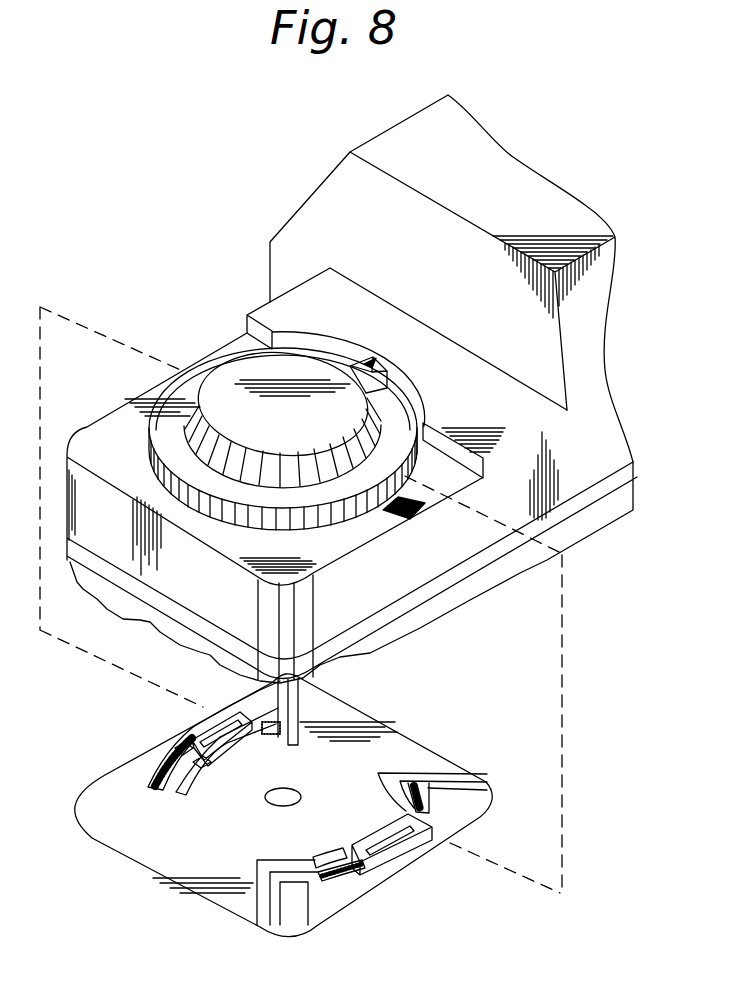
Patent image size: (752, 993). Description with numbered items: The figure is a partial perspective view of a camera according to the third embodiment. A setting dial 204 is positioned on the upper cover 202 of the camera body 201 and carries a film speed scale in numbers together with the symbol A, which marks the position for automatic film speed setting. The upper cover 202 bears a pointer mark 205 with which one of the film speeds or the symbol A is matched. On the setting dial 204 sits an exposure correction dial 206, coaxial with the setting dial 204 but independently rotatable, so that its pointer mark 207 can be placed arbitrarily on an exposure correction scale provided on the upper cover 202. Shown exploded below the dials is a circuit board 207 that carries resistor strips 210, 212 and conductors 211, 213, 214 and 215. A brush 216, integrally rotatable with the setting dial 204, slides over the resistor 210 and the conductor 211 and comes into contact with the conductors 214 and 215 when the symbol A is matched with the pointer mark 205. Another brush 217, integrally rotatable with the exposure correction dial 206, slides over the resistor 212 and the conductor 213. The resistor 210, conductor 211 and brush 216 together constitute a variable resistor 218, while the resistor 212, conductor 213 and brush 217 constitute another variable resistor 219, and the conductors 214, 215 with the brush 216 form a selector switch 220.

The camera body 201 is at (615, 512).
The upper cover 202 is at (598, 362).
The setting dial 204 is at (160, 403).
The pointer mark 205 is at (385, 513).
The exposure correction dial 206 is at (240, 372).
The pointer mark / circuit board 207 is at (347, 372).
The resistor strip 210 is at (352, 878).
The conductor 211 is at (328, 855).
The resistor strip 212 is at (152, 767).
The conductor 213 is at (188, 773).
The conductor 214 is at (303, 887).
The conductor 215 is at (277, 863).
The brush 216 is at (467, 823).
The brush 217 is at (209, 726).
The variable resistor 218 is at (409, 858).
The variable resistor 219 is at (222, 726).
The selector switch 220 is at (252, 896).